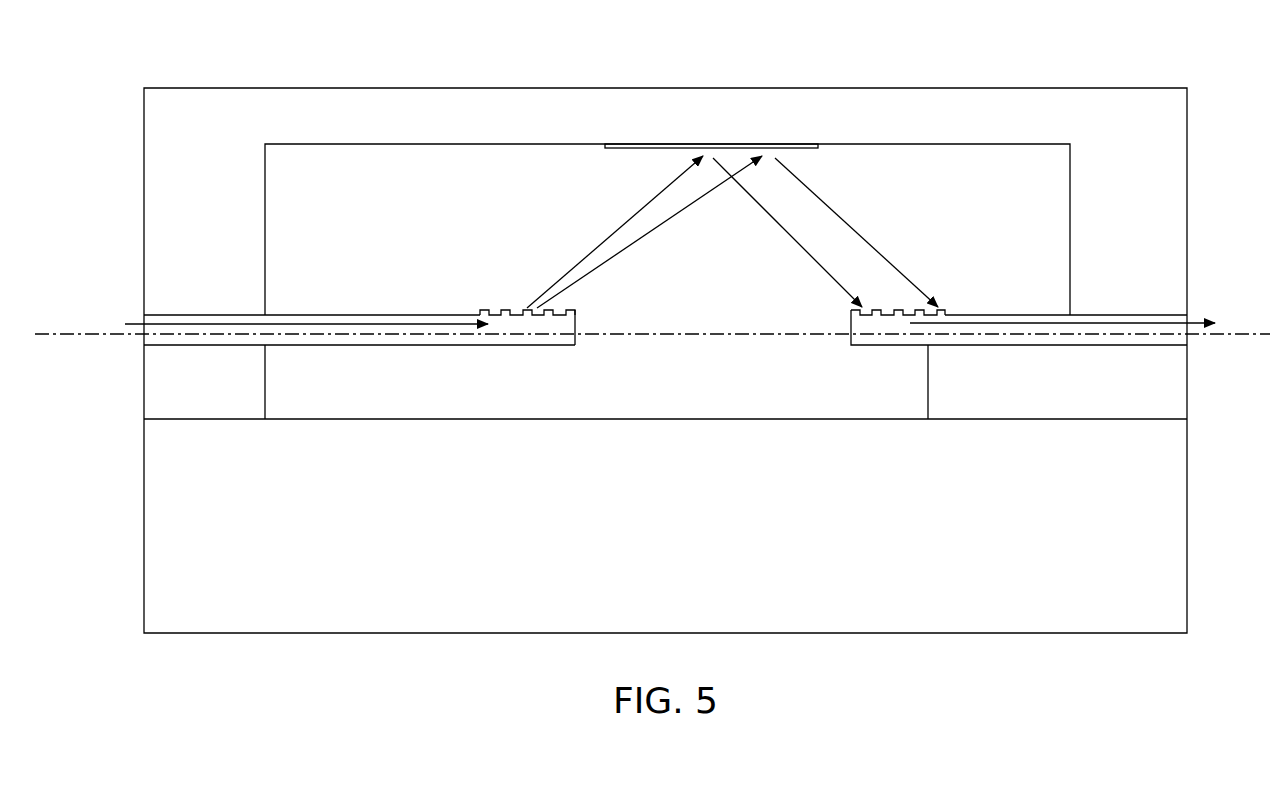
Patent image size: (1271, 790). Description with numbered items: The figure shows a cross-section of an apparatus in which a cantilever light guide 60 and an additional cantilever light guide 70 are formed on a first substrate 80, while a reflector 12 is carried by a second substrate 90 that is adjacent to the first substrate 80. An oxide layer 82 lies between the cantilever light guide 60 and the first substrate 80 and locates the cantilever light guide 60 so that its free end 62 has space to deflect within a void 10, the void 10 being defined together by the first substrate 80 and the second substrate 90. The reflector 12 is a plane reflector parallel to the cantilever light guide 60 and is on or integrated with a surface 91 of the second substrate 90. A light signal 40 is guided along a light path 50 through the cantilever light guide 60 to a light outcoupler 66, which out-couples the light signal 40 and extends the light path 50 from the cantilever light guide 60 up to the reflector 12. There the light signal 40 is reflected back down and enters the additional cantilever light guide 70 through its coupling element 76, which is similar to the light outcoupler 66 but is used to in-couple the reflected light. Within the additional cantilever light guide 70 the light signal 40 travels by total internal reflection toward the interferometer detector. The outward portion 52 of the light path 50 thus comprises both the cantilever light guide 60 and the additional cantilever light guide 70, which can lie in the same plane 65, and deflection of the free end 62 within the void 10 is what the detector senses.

The void 10 is at (541, 240).
The reflector 12 is at (653, 146).
The light signal 40 is at (128, 318).
The light path 50 is at (132, 332).
The outward portion 52 is at (317, 324).
The cantilever light guide 60 is at (365, 303).
The free end 62 is at (578, 325).
The plane 65 is at (1231, 333).
The light outcoupler 66 is at (504, 309).
The additional cantilever light guide 70 is at (997, 315).
The coupling element 76 is at (888, 307).
The first substrate 80 is at (170, 513).
The oxide layer 82 is at (157, 377).
The second substrate 90 is at (155, 202).
The surface 91 is at (892, 147).